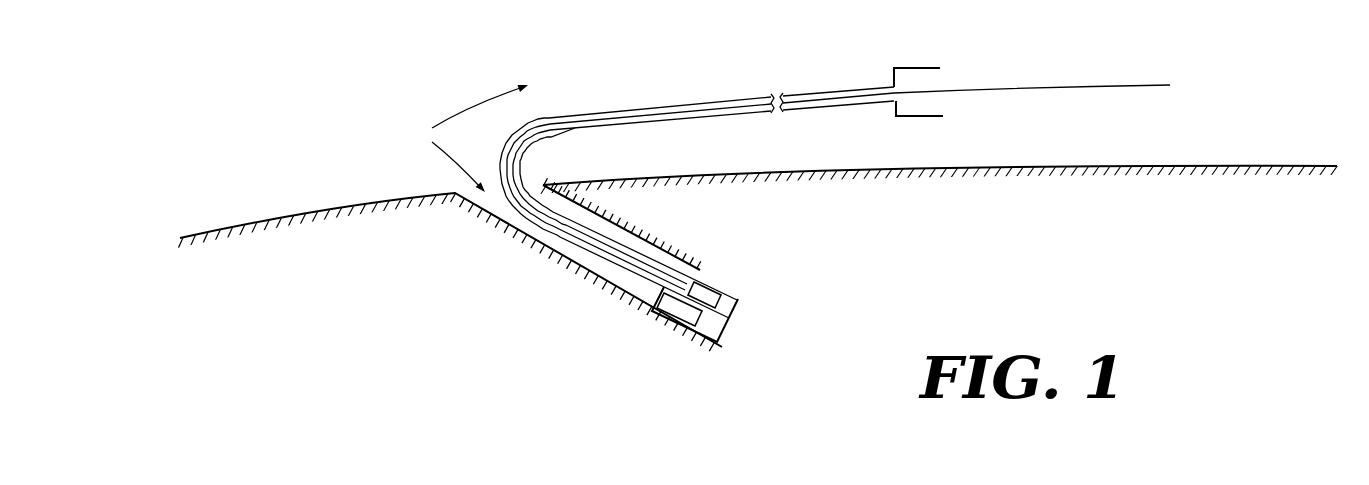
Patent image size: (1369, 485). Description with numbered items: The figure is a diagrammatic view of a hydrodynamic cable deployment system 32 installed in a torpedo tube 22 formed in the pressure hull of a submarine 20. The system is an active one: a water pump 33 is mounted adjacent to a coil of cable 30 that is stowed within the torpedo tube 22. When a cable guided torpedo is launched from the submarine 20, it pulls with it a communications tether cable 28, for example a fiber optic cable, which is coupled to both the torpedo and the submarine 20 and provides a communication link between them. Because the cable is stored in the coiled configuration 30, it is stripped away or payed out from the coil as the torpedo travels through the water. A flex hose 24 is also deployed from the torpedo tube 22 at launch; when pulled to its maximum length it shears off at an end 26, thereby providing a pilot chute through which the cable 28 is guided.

The submarine 20 is at (1028, 168).
The torpedo tube 22 is at (513, 237).
The flex hose 24 is at (598, 106).
The end 26 is at (912, 67).
The communications tether cable 28 is at (1094, 84).
The coil of cable 30 is at (705, 282).
The hydrodynamic cable deployment system 32 is at (463, 138).
The water pump 33 is at (728, 320).